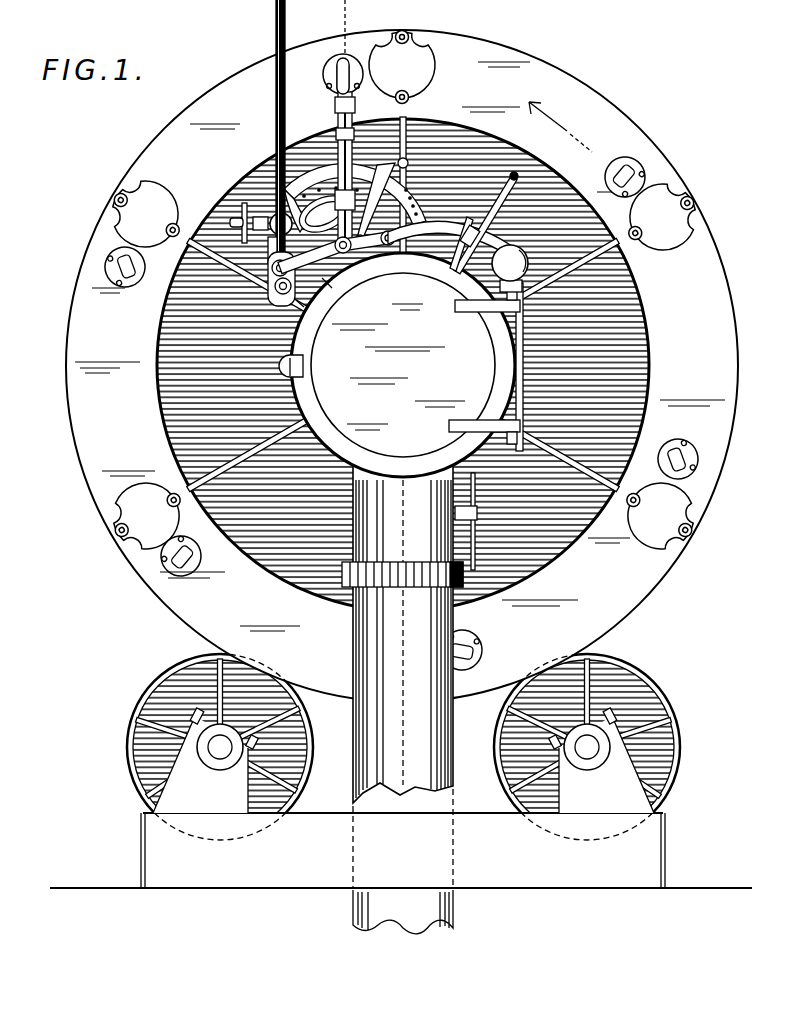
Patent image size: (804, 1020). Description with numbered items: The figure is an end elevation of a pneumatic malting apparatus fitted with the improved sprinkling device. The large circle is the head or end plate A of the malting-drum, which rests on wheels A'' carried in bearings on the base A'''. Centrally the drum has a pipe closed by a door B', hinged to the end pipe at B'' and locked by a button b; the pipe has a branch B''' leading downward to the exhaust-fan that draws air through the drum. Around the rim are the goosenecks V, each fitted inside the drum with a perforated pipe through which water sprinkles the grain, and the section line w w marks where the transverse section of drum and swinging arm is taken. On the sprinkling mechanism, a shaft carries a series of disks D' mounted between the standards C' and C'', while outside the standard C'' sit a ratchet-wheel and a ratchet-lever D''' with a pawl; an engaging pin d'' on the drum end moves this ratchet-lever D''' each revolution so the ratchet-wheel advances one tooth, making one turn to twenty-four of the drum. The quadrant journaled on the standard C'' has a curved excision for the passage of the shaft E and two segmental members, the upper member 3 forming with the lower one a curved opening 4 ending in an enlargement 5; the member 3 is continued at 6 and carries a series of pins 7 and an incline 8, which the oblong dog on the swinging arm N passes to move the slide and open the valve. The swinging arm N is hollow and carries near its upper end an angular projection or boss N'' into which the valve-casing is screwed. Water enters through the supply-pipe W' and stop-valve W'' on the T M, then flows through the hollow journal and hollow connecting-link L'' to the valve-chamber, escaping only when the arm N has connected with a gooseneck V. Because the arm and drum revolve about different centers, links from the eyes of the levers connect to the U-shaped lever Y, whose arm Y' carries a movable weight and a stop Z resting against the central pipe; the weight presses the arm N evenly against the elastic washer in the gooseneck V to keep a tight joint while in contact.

The head or end plate A is at (402, 366).
The wheels A'' is at (398, 747).
The base A''' is at (401, 850).
The door B' is at (403, 365).
The hinge B'' is at (505, 367).
The branch B''' is at (409, 699).
The button b is at (304, 366).
The standard C' is at (352, 294).
The standard C'' is at (283, 316).
The disks D' is at (330, 245).
The ratchet-lever D''' is at (256, 279).
The engaging pin d'' is at (424, 158).
The shaft E is at (324, 214).
The connecting-link L'' is at (336, 252).
The T M is at (266, 250).
The swinging arm N is at (365, 168).
The angular projection or boss N'' is at (335, 99).
The gooseneck V is at (401, 363).
The supply-pipe W' is at (266, 126).
The stop-valve W'' is at (249, 214).
The line w w is at (338, 27).
The U-shaped lever Y is at (450, 234).
The arm Y' is at (510, 268).
The stop Z is at (484, 223).
The upper segmental member 3 is at (305, 189).
The curved opening 4 is at (320, 184).
The enlargement 5 is at (337, 183).
The continuation 6 is at (358, 184).
The pins 7 is at (416, 188).
The incline 8 is at (419, 204).